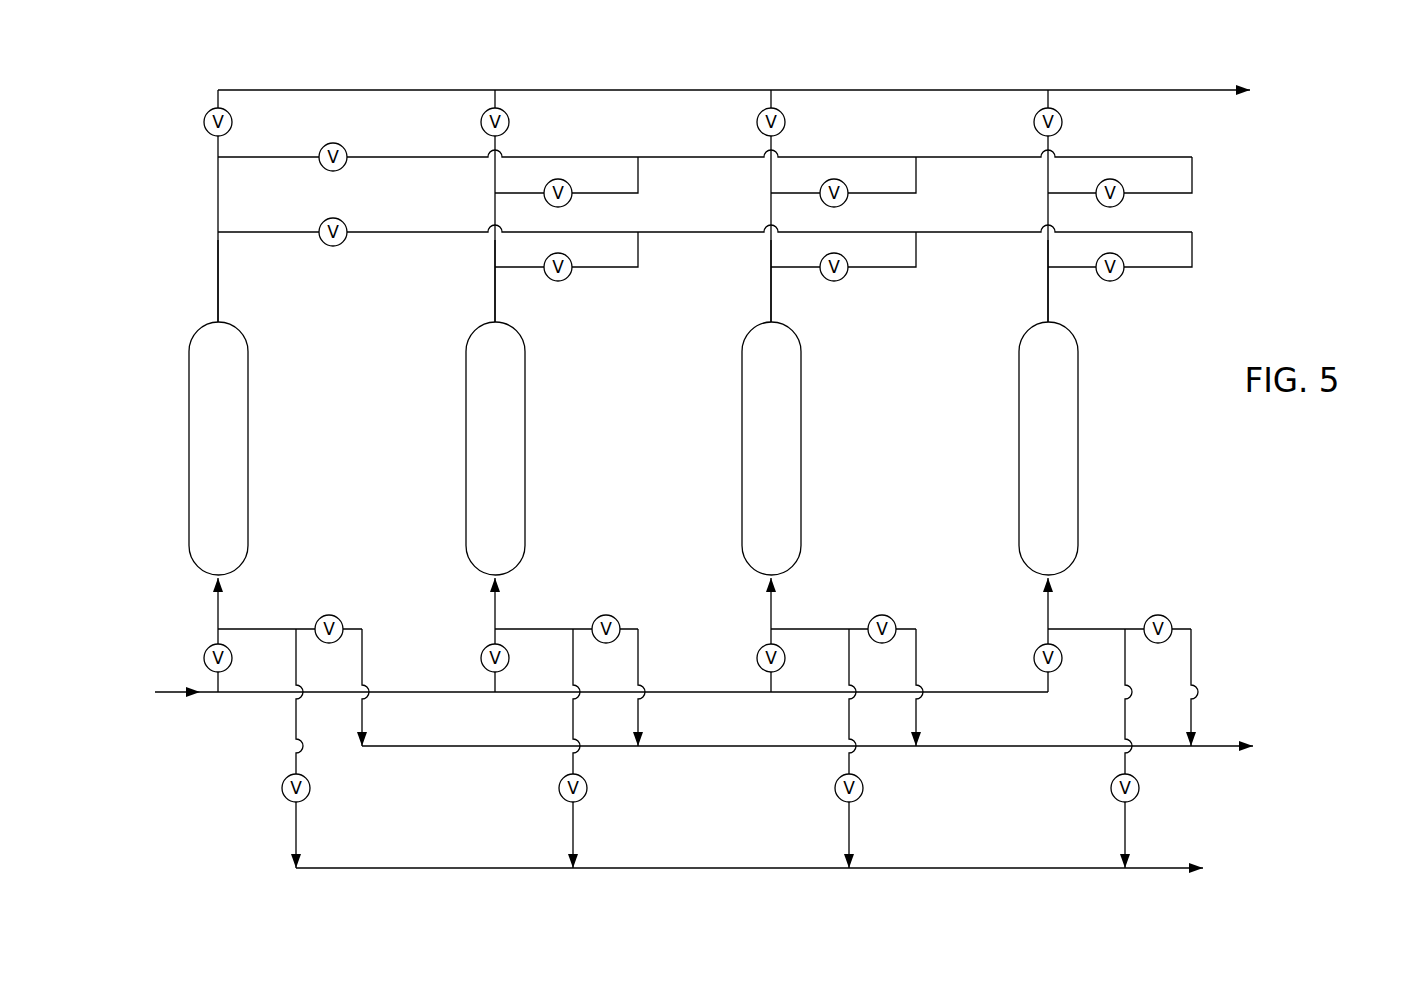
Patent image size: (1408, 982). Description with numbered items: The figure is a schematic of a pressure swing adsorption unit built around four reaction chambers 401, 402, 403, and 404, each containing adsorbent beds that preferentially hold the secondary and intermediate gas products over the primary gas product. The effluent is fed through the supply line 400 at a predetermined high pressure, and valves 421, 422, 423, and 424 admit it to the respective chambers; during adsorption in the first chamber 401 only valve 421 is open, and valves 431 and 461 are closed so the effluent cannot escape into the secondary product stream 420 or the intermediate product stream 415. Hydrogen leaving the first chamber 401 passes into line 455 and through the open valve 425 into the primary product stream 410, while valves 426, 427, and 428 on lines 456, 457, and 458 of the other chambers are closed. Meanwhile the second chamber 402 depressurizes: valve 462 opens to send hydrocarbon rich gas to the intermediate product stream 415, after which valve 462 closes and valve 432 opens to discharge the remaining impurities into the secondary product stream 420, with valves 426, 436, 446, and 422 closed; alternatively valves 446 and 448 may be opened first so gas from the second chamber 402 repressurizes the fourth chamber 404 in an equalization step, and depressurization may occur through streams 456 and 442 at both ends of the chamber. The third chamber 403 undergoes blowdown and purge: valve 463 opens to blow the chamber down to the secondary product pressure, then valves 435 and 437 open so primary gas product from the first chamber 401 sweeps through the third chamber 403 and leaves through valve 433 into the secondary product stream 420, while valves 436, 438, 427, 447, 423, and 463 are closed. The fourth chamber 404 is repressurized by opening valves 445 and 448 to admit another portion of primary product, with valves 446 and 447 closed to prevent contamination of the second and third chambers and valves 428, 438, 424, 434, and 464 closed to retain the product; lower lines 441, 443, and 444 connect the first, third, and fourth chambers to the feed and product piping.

The supply line 400 is at (170, 692).
The first reaction chamber 401 is at (201, 412).
The second reaction chamber 402 is at (478, 412).
The third reaction chamber 403 is at (754, 412).
The fourth reaction chamber 404 is at (1031, 412).
The primary gas product stream line 410 is at (1158, 90).
The intermediate gas product stream line 415 is at (1150, 868).
The secondary gas product stream line 420 is at (1207, 746).
The valve 421 is at (232, 655).
The valve 422 is at (509, 655).
The valve 423 is at (785, 655).
The valve 424 is at (1062, 655).
The valve 425 is at (204, 122).
The valve 426 is at (481, 122).
The valve 427 is at (757, 122).
The valve 428 is at (1034, 122).
The valve 431 is at (340, 618).
The valve 432 is at (617, 618).
The valve 433 is at (893, 618).
The valve 434 is at (1170, 618).
The valve 435 is at (327, 168).
The valve 436 is at (568, 205).
The valve 437 is at (844, 205).
The valve 438 is at (1120, 205).
The line 441 is at (218, 619).
The stream line 442 is at (495, 619).
The line 443 is at (771, 619).
The line 444 is at (1048, 619).
The valve 445 is at (327, 243).
The valve 446 is at (553, 278).
The valve 447 is at (829, 278).
The valve 448 is at (1105, 278).
The line 455 is at (218, 297).
The line 456 is at (495, 297).
The line 457 is at (771, 297).
The line 458 is at (1048, 297).
The valve 461 is at (282, 788).
The valve 462 is at (559, 788).
The valve 463 is at (835, 788).
The valve 464 is at (1111, 788).